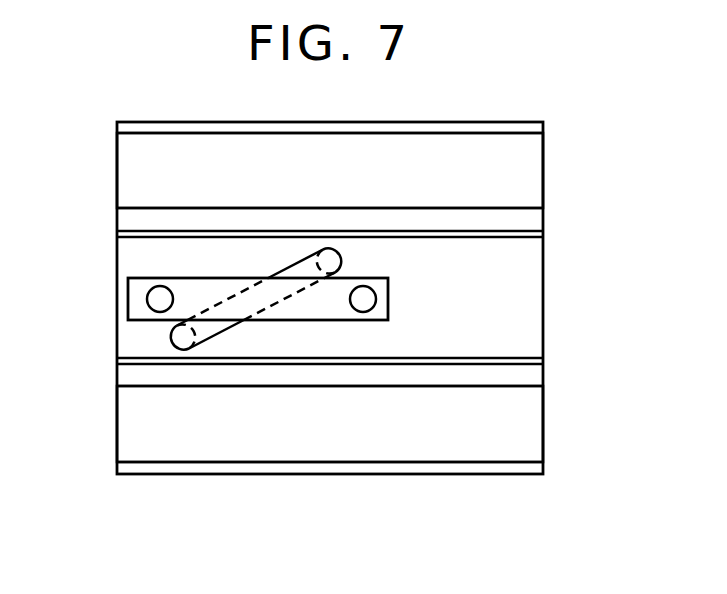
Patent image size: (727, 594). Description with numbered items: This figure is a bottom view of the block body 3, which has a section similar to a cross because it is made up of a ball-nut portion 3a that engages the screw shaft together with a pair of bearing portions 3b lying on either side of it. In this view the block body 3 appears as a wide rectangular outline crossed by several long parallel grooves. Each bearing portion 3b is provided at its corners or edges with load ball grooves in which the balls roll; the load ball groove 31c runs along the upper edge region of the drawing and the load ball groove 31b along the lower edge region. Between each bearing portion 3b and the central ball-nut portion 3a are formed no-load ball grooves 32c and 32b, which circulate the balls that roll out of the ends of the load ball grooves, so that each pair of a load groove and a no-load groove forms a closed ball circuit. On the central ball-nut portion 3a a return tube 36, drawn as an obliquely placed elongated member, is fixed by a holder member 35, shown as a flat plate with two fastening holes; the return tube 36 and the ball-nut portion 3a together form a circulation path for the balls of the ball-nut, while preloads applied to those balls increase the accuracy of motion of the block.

The block body 3 is at (550, 171).
The ball-nut portion 3a is at (528, 293).
The bearing portion 3b is at (128, 173).
The load ball groove 31b is at (500, 466).
The load ball groove 31c is at (505, 127).
The no-load ball groove 32b is at (527, 378).
The no-load ball groove 32c is at (527, 223).
The holder member 35 is at (128, 294).
The return tube 36 is at (207, 335).